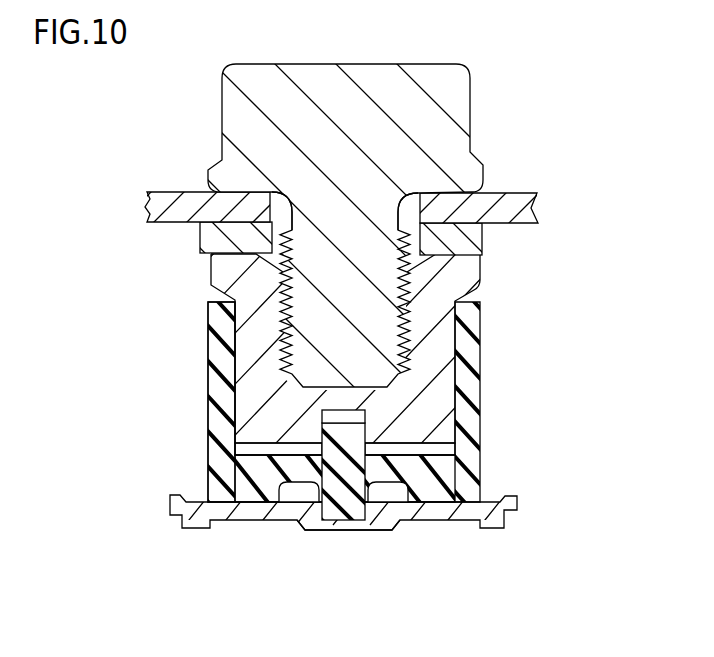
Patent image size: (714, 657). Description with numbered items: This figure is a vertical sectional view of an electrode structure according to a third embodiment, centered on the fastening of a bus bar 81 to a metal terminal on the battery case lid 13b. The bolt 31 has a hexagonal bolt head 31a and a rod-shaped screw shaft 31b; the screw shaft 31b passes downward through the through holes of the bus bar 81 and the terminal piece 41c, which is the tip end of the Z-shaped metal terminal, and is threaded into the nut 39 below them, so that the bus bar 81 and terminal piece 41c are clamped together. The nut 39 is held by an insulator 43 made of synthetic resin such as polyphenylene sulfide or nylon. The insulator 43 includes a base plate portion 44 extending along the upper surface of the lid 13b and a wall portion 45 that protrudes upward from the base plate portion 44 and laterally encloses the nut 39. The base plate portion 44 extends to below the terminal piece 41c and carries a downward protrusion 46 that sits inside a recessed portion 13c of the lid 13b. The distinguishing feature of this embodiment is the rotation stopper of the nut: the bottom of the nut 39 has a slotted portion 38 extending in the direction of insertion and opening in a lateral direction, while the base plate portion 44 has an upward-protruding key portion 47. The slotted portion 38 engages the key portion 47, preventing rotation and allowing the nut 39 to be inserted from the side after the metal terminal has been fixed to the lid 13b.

The bolt 31 is at (357, 225).
The bolt head 31a is at (450, 109).
The screw shaft 31b is at (347, 280).
The bus bar 81 is at (517, 208).
The terminal piece 41c is at (212, 240).
The nut 39 is at (458, 273).
The wall portion 45 is at (222, 354).
The insulator 43 is at (329, 400).
The slotted portion 38 is at (350, 417).
The base plate portion 44 is at (430, 473).
The recessed portion 13c is at (315, 507).
The protrusion 46 is at (351, 488).
The key portion 47 is at (372, 505).
The lid 13b is at (437, 513).